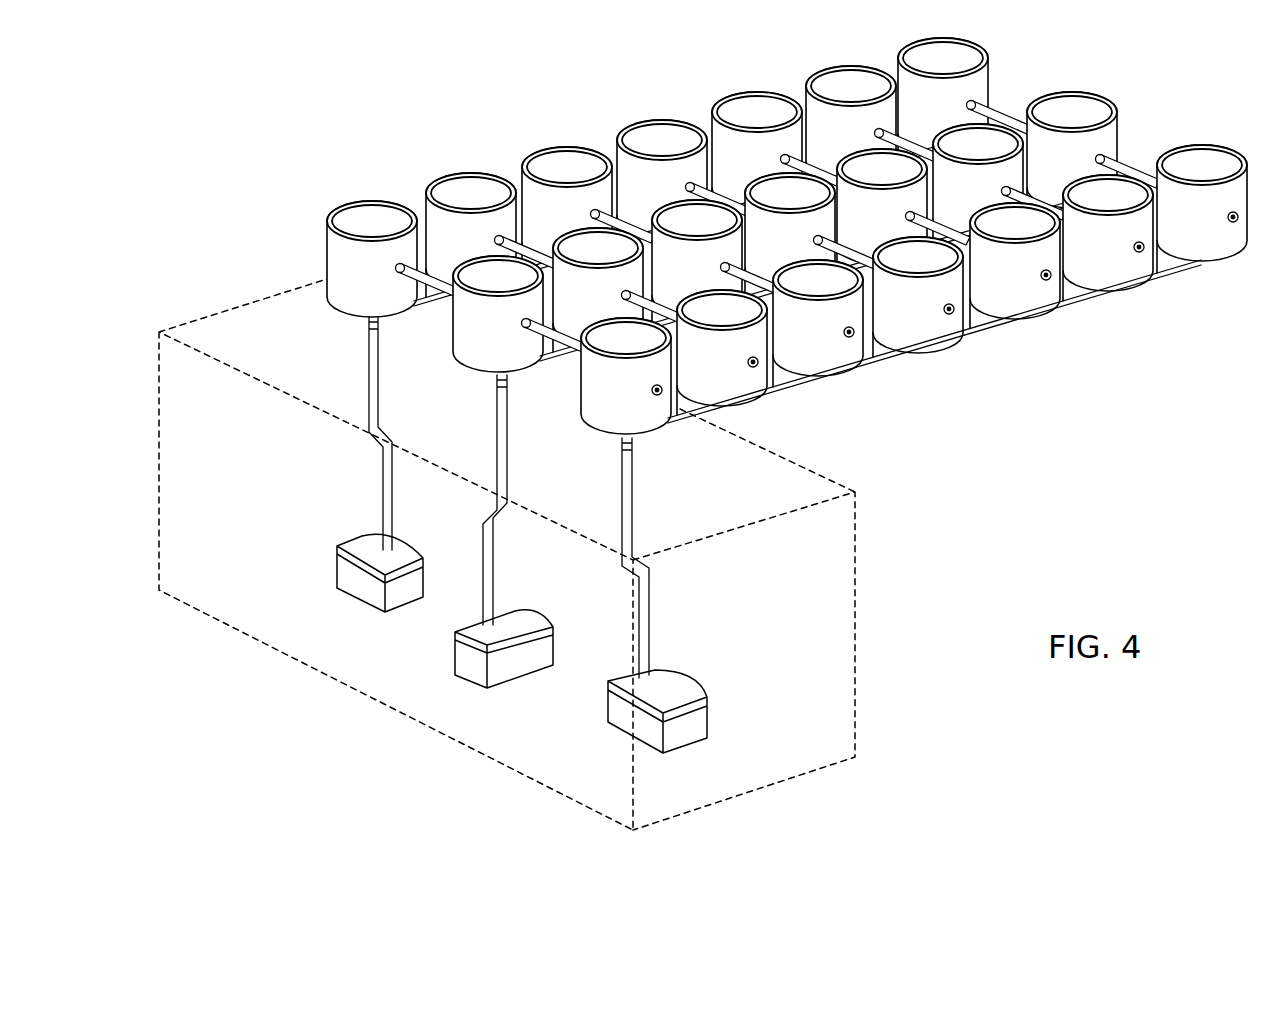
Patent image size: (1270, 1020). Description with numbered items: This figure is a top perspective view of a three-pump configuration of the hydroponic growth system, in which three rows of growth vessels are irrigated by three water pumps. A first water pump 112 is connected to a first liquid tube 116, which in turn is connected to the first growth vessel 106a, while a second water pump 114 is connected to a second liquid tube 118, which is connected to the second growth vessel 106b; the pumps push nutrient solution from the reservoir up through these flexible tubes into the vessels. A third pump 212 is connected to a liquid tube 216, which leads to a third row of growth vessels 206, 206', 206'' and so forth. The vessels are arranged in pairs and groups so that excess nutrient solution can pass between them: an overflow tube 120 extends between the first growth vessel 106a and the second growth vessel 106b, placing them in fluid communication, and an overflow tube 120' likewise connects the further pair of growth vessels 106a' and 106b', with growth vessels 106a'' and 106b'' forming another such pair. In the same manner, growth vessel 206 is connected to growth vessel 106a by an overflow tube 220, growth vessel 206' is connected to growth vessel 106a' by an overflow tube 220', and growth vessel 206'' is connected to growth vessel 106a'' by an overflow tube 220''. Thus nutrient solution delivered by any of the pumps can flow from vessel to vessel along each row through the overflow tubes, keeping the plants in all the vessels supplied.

The growth vessel 206 is at (335, 258).
The growth vessel 206' is at (439, 229).
The growth vessel 206'' is at (552, 196).
The overflow tube 220 is at (361, 278).
The overflow tube 220' is at (496, 194).
The overflow tube 220'' is at (601, 167).
The first growth vessel 106a is at (478, 327).
The growth vessel 106a' is at (589, 274).
The growth vessel 106a'' is at (687, 243).
The overflow tube 120 is at (491, 337).
The overflow tube 120' is at (666, 287).
The second growth vessel 106b is at (700, 379).
The growth vessel 106b' is at (783, 357).
The growth vessel 106b'' is at (861, 330).
The first liquid tube 116 is at (503, 406).
The second liquid tube 118 is at (633, 472).
The liquid tube 216 is at (383, 469).
The third pump 212 is at (358, 584).
The first water pump 112 is at (465, 662).
The second water pump 114 is at (622, 713).